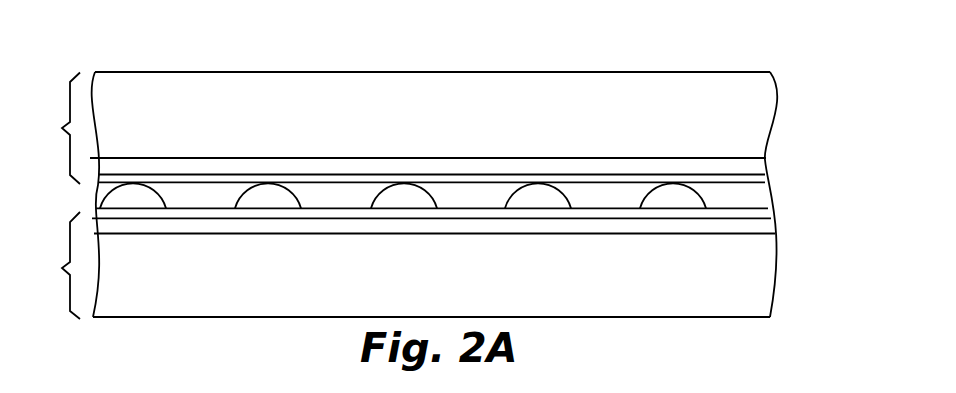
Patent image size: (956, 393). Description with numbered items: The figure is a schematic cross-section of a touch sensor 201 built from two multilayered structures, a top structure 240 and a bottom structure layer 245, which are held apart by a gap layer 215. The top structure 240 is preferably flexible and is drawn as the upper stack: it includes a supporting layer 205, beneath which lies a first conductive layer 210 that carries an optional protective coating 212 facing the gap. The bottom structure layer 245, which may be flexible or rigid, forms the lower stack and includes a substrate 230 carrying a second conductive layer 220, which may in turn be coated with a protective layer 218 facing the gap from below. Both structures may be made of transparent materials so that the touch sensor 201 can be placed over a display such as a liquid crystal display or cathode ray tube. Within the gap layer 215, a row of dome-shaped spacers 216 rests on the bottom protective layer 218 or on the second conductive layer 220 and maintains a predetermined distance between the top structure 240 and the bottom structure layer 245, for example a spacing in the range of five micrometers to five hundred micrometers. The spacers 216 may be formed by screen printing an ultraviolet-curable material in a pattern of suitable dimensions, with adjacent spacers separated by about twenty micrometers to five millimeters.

The touch sensor 201 is at (600, 70).
The supporting layer 205 is at (728, 78).
The first conductive layer 210 is at (758, 167).
The protective coating 212 is at (765, 178).
The gap layer 215 is at (763, 192).
The spacers 216 is at (245, 197).
The protective layer 218 is at (772, 212).
The second conductive layer 220 is at (775, 227).
The substrate 230 is at (733, 310).
The top structure 240 is at (47, 129).
The bottom structure layer 245 is at (47, 265).